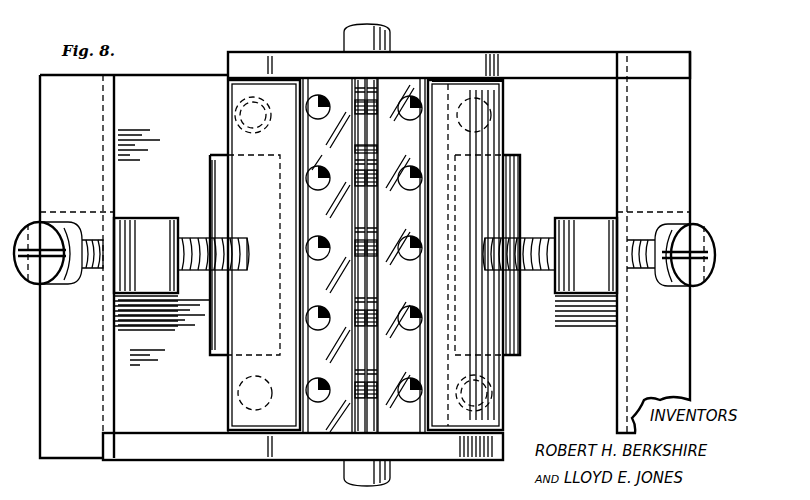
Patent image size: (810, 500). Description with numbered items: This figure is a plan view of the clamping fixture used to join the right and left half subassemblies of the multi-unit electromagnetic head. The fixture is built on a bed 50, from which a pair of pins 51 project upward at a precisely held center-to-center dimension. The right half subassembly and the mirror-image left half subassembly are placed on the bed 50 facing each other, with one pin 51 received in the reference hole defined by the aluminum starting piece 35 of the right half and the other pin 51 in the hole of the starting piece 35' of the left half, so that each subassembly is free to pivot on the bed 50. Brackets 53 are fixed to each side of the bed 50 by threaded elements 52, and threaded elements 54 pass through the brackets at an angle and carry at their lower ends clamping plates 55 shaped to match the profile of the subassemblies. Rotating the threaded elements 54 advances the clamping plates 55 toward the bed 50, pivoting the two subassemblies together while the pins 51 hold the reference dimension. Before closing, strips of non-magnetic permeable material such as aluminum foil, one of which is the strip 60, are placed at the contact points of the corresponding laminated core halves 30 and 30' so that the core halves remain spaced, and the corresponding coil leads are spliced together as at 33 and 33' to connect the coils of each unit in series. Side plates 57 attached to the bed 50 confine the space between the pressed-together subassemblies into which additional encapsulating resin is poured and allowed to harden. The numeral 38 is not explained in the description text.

The laminated core half 30 is at (400, 255).
The laminated core half 30' is at (329, 255).
The splice 33 is at (384, 255).
The splice 33' is at (346, 255).
The aluminum starting piece 35 is at (465, 281).
The aluminum starting piece 35' is at (273, 226).
The hole 38 is at (240, 396).
The bed 50 is at (185, 348).
The pin 51 is at (236, 100).
The threaded element 52 is at (714, 262).
The bracket 53 is at (58, 145).
The threaded element 54 is at (30, 280).
The clamping plate 55 is at (222, 185).
The side plate 57 is at (432, 57).
The non-magnetic permeable strip 60 is at (370, 150).